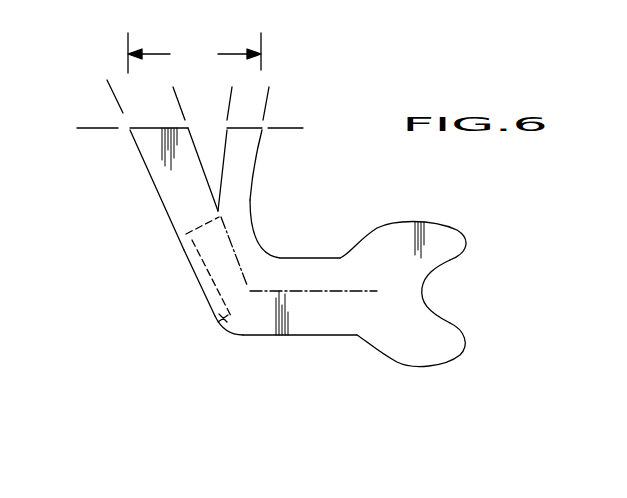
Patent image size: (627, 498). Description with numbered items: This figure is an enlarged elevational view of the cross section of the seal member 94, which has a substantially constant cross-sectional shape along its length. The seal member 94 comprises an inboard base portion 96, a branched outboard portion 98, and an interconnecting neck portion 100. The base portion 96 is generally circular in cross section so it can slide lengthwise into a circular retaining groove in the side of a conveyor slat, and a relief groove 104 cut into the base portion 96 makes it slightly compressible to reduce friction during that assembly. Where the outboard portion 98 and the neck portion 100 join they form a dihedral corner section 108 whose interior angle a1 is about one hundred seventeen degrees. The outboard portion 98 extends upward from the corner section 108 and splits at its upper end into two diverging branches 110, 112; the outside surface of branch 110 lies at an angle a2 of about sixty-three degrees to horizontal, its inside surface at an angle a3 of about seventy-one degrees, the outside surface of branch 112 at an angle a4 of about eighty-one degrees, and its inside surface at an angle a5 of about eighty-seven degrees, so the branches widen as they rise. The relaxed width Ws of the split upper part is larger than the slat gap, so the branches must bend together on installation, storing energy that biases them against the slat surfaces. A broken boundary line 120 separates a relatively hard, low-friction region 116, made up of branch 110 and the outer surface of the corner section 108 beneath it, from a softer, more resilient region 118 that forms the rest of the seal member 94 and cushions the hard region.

The seal member 94 is at (253, 336).
The inboard base portion 96 is at (405, 278).
The branched outboard portion 98 is at (183, 260).
The neck portion 100 is at (337, 272).
The relief groove 104 is at (453, 303).
The dihedral corner section 108 is at (237, 313).
The first branch 110 is at (145, 167).
The second branch 112 is at (253, 170).
The relatively hard region 116 is at (175, 195).
The remaining region 118 is at (240, 202).
The boundary line 120 is at (175, 240).
The interior angle a1 is at (255, 283).
The angle of outside surface of branch 110 a2 is at (102, 112).
The angle of inside surface of branch 110 a3 is at (183, 122).
The angle of outside surface of branch 112 a4 is at (273, 120).
The angle of inside surface of branch 112 a5 is at (233, 122).
The static width dimension Ws is at (194, 53).